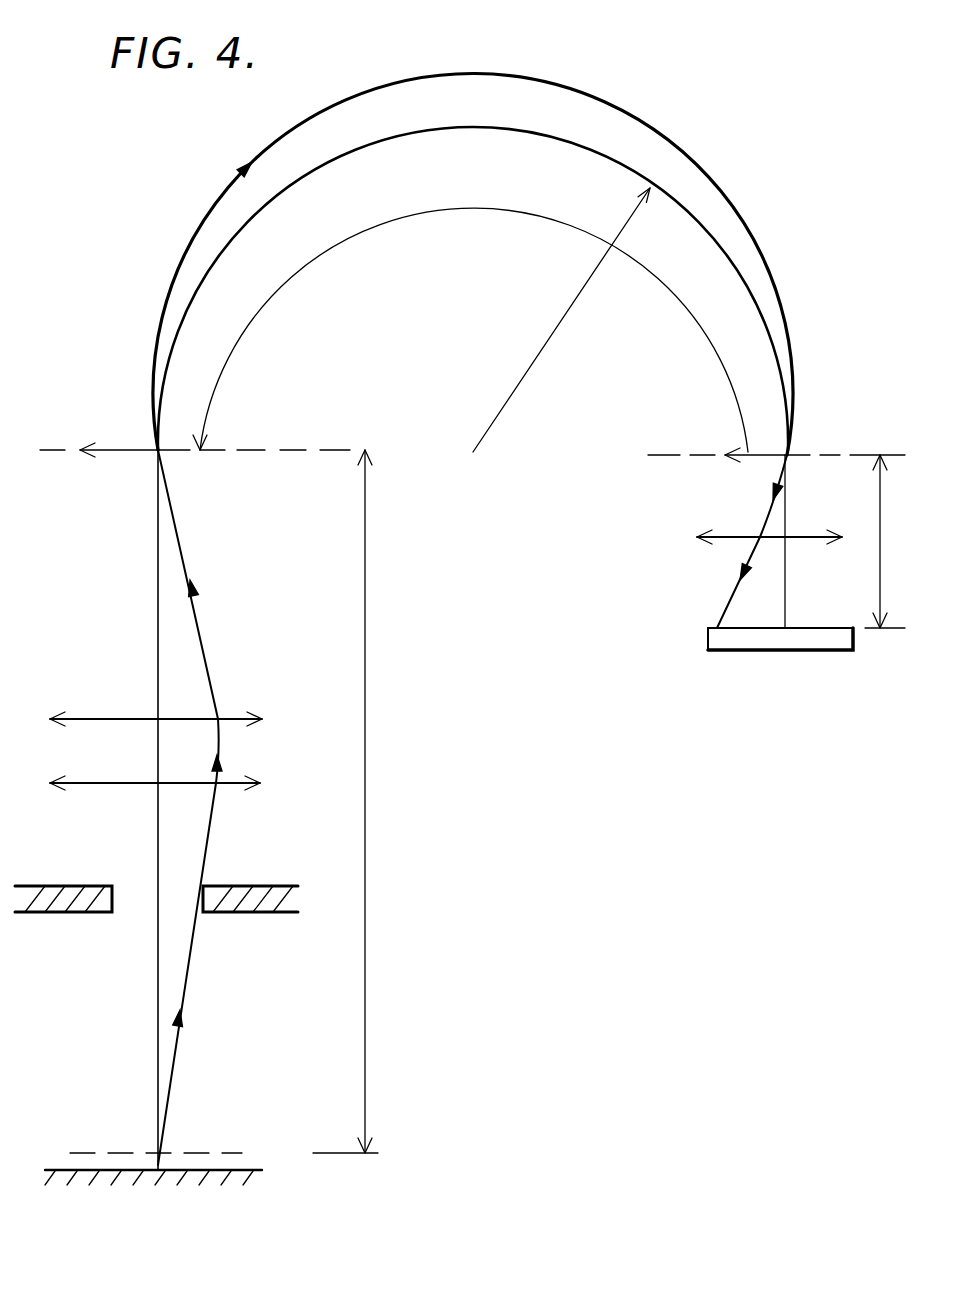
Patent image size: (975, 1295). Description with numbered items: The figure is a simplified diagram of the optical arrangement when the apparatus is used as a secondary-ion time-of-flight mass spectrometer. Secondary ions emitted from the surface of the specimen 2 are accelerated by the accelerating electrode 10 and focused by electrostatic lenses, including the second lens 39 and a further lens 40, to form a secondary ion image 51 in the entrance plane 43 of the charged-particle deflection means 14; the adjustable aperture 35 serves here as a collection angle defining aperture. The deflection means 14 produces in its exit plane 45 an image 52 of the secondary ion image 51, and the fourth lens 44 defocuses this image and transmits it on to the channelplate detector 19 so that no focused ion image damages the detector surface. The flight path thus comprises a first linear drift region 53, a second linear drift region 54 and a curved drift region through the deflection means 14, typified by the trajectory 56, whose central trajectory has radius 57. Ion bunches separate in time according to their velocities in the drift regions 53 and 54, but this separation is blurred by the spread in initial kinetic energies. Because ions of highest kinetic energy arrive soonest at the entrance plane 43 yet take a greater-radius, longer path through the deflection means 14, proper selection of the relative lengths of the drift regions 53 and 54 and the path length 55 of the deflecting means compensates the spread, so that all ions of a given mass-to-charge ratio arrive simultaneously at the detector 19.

The specimen 2 is at (205, 1170).
The accelerating electrode 10 is at (113, 1151).
The charged-particle deflection means 14 is at (474, 244).
The channelplate detector 19 is at (795, 653).
The adjustable aperture 35 is at (245, 886).
The second lens 39 is at (228, 783).
The lens 40 is at (232, 719).
The entrance plane 43 is at (252, 448).
The fourth lens 44 is at (800, 537).
The exit plane 45 is at (828, 450).
The secondary ion image 51 is at (118, 447).
The image 52 is at (746, 450).
The first linear drift region 53 is at (368, 812).
The second linear drift region 54 is at (880, 560).
The path length 55 is at (355, 197).
The trajectory 56 is at (598, 98).
The radius 57 is at (561, 320).